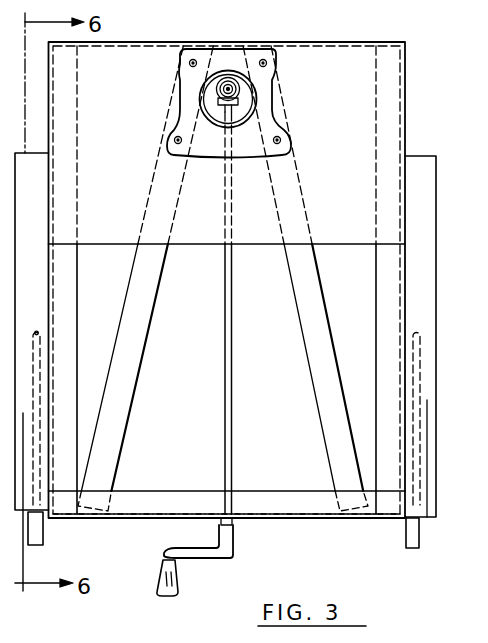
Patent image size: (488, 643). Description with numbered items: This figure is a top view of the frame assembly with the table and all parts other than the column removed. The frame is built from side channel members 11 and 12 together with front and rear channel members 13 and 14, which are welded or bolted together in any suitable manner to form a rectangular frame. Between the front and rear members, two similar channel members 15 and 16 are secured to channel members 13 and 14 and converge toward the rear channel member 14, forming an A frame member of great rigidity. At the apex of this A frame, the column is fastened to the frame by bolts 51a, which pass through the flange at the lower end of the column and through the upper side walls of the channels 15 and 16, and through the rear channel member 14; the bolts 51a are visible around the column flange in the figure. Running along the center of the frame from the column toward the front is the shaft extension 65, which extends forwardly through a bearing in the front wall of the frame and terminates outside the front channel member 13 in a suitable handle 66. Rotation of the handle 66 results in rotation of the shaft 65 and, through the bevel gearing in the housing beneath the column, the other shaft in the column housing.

The side channel member 11 is at (72, 285).
The side channel member 12 is at (386, 271).
The front channel member 13 is at (177, 490).
The rear channel member 14 is at (349, 42).
The channel member 15 is at (141, 367).
The channel member 16 is at (309, 348).
The bolts 51a is at (266, 67).
The shaft extension 65 is at (231, 455).
The handle 66 is at (234, 546).